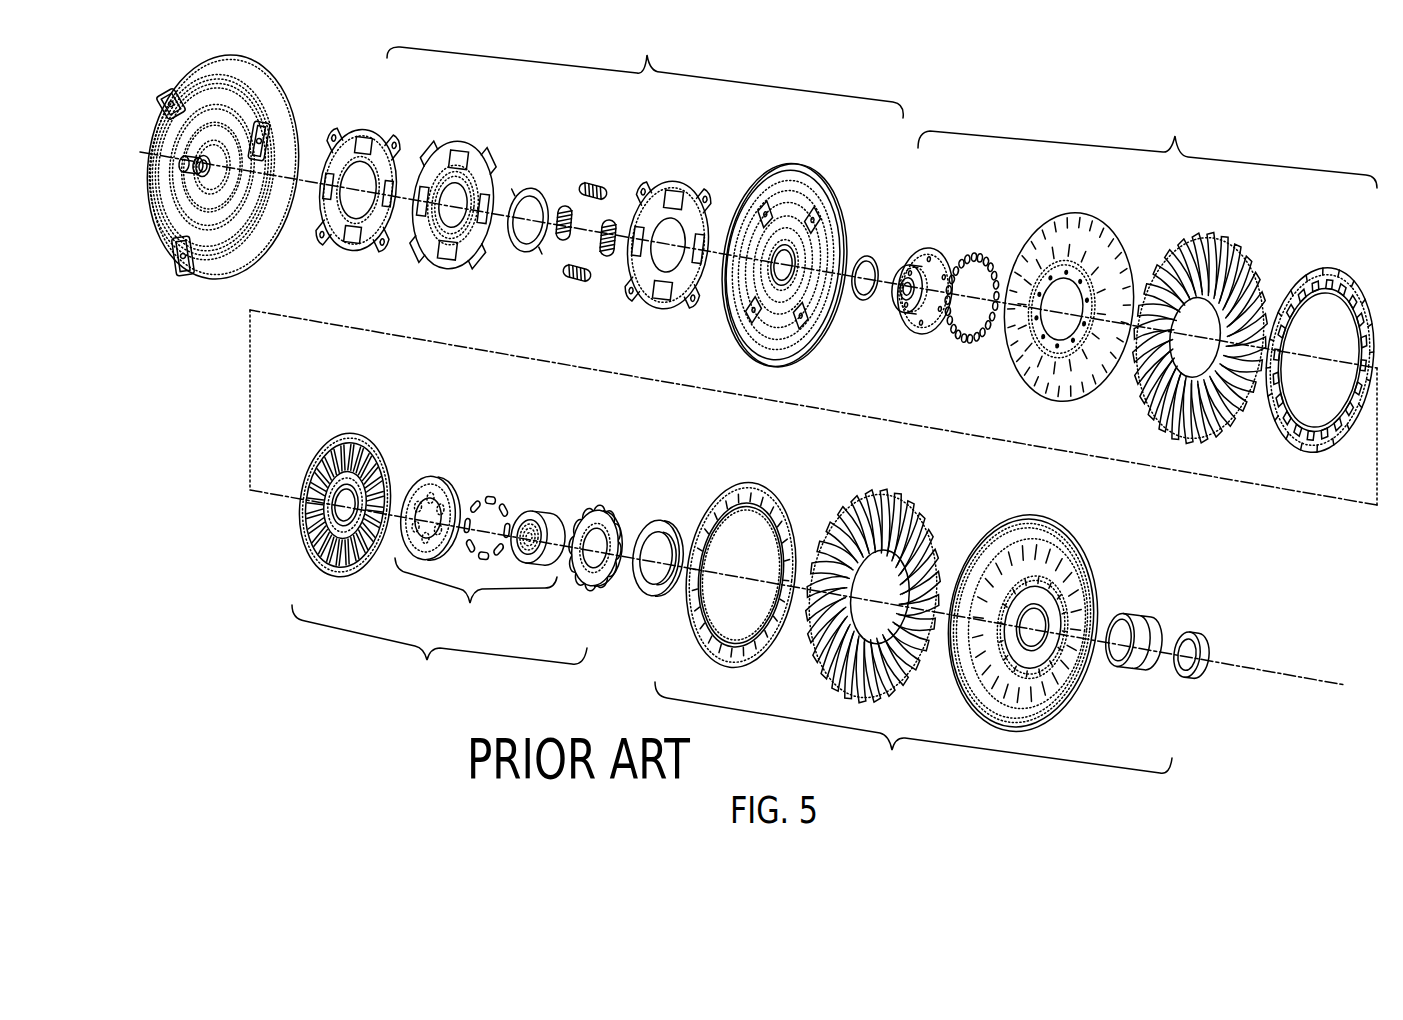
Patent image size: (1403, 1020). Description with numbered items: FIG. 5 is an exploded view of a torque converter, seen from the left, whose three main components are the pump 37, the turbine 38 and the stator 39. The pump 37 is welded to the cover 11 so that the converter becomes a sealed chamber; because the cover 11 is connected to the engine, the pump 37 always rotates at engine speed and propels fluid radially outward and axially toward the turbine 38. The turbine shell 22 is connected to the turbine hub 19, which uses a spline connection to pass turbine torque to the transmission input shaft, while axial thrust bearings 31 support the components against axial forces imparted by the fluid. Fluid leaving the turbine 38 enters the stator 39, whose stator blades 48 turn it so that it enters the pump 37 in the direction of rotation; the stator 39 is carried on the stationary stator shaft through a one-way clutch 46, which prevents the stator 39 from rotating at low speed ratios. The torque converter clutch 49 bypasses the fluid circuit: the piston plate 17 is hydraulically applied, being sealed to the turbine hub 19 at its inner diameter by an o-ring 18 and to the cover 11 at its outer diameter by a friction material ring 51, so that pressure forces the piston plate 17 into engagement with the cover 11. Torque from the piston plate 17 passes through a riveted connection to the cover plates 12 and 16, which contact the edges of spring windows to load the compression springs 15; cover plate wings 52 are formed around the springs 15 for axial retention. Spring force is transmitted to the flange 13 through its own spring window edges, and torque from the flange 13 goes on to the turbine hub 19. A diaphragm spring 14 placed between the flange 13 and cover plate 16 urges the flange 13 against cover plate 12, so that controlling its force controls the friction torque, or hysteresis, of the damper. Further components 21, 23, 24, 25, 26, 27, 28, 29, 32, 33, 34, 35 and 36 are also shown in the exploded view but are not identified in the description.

The cover 11 is at (307, 83).
The cover plate 12 is at (394, 160).
The flange 13 is at (487, 140).
The diaphragm spring 14 is at (547, 173).
The compression springs 15 is at (623, 168).
The cover plate 16 is at (707, 168).
The piston plate 17 is at (798, 235).
The o-ring 18 is at (888, 240).
The turbine hub 19 is at (947, 228).
The roller bearing 21 is at (997, 250).
The turbine shell 22 is at (1113, 210).
The turbine blades 23 is at (1238, 237).
The turbine core ring 24 is at (1335, 258).
The stator 25 is at (361, 466).
The one-way clutch race 26 is at (452, 467).
The rollers 27 is at (500, 487).
The bearing 28 is at (560, 497).
The thrust washer 29 is at (620, 498).
The axial thrust bearings 31 is at (682, 508).
The impeller core ring 32 is at (797, 492).
The impeller blades 33 is at (943, 503).
The impeller shell 34 is at (1100, 535).
The impeller hub sleeve 35 is at (1153, 603).
The bushing 36 is at (1210, 620).
The pump 37 is at (913, 733).
The turbine 38 is at (1147, 145).
The stator 39 is at (439, 648).
The one-way clutch 46 is at (476, 597).
The stator blades 48 is at (350, 437).
The torque converter clutch 49 is at (645, 69).
The friction material ring 51 is at (786, 172).
The cover plate wings 52 is at (357, 137).